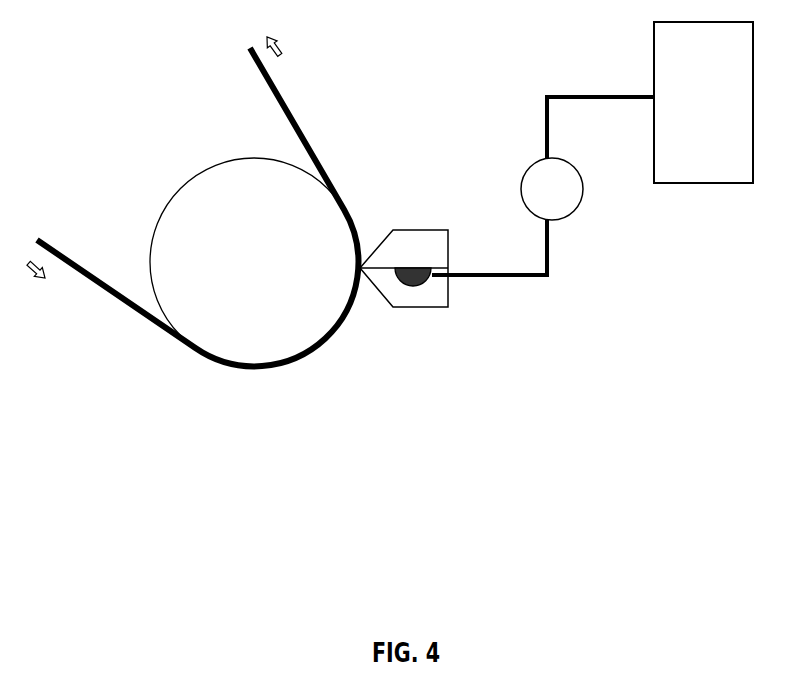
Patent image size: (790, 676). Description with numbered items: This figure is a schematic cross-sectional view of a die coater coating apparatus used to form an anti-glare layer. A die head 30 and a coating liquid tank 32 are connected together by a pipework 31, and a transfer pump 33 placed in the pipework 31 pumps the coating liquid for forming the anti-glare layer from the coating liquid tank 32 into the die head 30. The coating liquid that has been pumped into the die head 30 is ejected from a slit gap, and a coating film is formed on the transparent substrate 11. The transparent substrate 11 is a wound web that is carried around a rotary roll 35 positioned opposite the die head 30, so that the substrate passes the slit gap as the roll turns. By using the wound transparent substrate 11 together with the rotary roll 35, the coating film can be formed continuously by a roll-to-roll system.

The transparent substrate 11 is at (115, 300).
The die head 30 is at (432, 293).
The pipework 31 is at (548, 262).
The coating liquid tank 32 is at (697, 145).
The transfer pump 33 is at (532, 198).
The rotary roll 35 is at (252, 320).